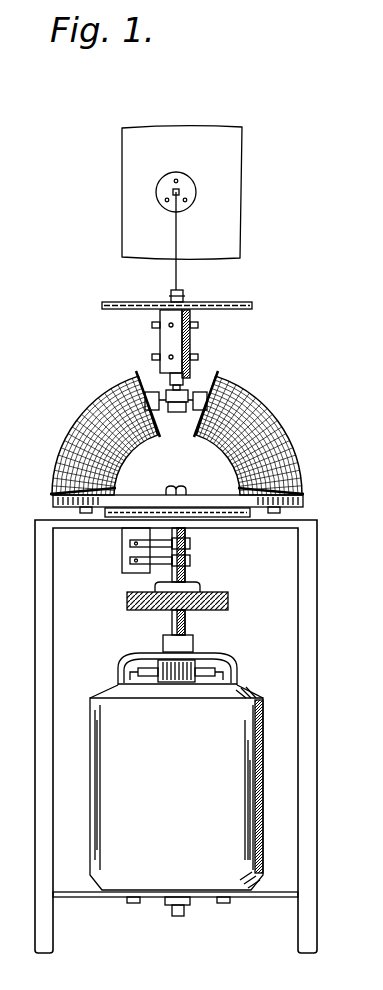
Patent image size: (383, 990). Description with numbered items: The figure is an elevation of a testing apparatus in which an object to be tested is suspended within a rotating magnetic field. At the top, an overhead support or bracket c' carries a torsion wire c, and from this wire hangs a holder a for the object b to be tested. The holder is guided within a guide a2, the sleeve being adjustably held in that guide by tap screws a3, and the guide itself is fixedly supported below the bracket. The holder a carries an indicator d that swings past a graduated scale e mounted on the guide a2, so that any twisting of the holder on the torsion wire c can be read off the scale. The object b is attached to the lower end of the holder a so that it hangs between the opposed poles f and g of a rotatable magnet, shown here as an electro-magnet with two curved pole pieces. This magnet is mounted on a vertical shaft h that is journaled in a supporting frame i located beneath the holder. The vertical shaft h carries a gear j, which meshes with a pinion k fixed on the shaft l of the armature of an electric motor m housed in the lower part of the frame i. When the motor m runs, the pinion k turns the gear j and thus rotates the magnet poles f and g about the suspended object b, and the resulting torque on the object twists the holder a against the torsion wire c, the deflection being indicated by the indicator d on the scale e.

The overhead support or bracket c' is at (182, 193).
The torsion wire c is at (188, 241).
The indicator d is at (163, 302).
The graduated scale e is at (221, 302).
The guide a2 is at (170, 340).
The tap screws a3 is at (198, 353).
The holder a is at (193, 378).
The object b is at (180, 415).
The pole of rotatable magnet f is at (112, 387).
The pole of rotatable magnet g is at (236, 396).
The supporting frame i is at (187, 719).
The vertical shaft h is at (186, 575).
The gear j is at (127, 596).
The pinion k is at (190, 613).
The shaft of the armature l is at (173, 622).
The electric motor m is at (176, 771).